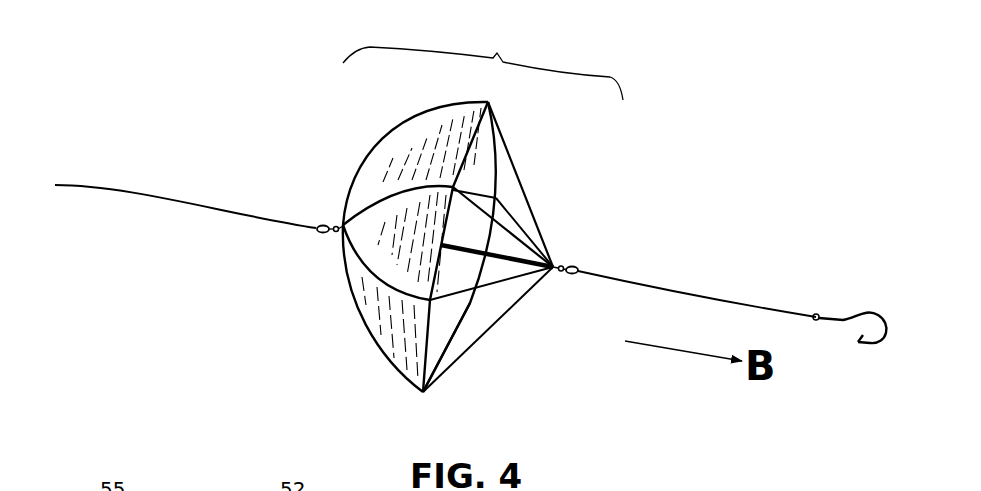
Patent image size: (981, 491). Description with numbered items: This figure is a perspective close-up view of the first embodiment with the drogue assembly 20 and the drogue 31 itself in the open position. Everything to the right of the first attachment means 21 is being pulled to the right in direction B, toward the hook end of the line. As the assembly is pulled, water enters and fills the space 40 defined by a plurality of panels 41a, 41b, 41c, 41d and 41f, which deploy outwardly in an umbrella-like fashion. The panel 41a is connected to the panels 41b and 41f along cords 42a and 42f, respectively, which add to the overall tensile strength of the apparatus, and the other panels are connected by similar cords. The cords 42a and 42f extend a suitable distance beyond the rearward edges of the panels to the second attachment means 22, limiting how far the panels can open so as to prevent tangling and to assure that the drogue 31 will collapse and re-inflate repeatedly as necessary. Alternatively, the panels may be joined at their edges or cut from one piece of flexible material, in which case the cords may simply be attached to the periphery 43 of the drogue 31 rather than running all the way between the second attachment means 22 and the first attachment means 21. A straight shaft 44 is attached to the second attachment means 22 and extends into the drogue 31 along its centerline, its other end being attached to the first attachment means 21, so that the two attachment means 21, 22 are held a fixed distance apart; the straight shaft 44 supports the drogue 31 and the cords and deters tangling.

The drogue assembly 20 is at (483, 209).
The first attachment means 21 is at (308, 240).
The second attachment means 22 is at (573, 295).
The drogue 31 is at (363, 373).
The space 40 is at (481, 176).
The panel 41a is at (373, 178).
The panel 41b is at (363, 237).
The panel 41c is at (367, 315).
The panel 41d is at (437, 340).
The panel 41f is at (480, 145).
The cord 42a is at (347, 213).
The cord 42f is at (422, 135).
The periphery 43 is at (455, 333).
The straight shaft 44 is at (492, 256).